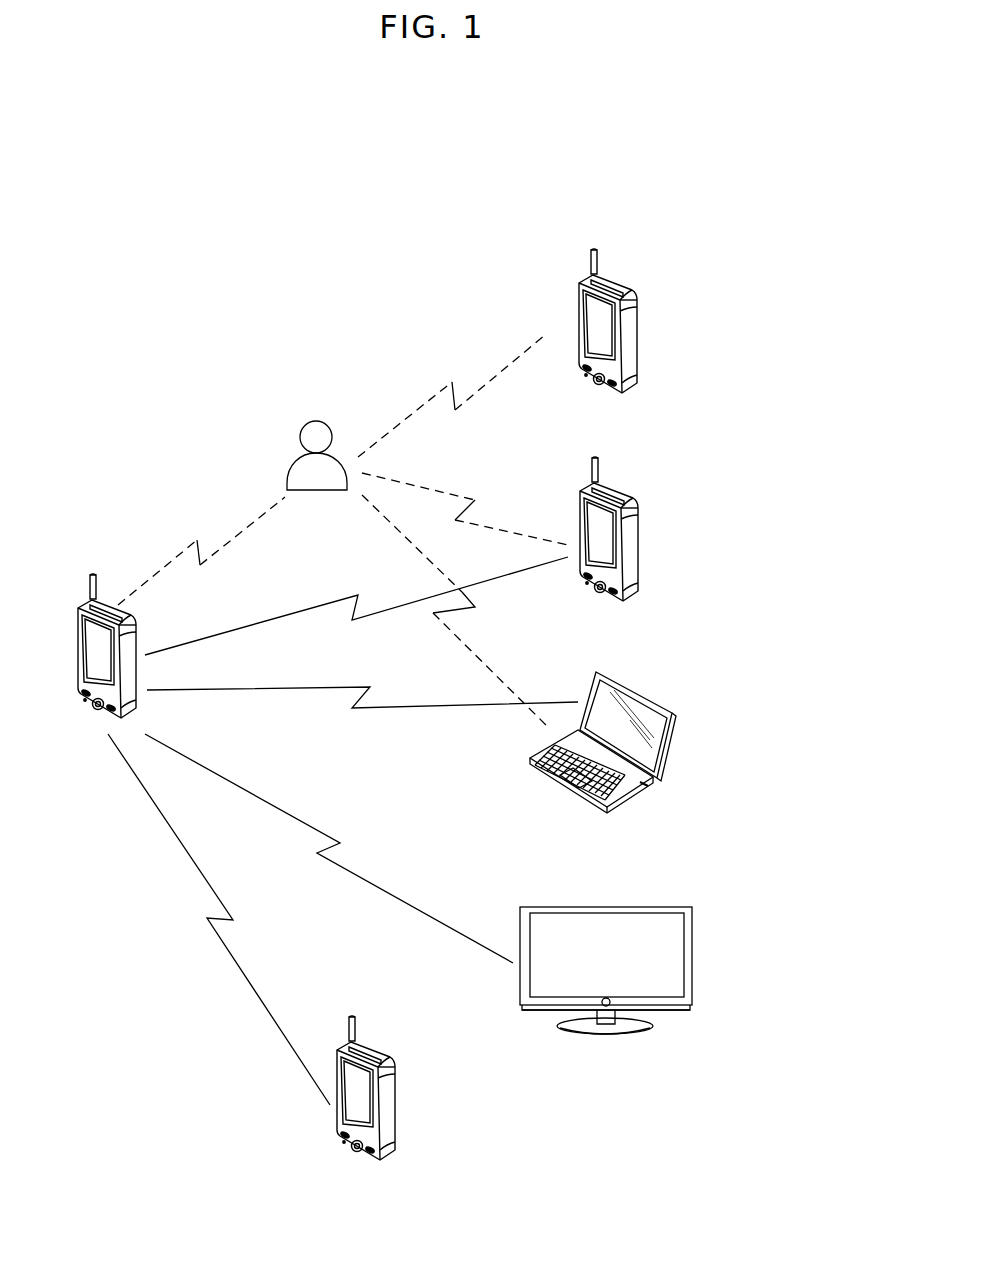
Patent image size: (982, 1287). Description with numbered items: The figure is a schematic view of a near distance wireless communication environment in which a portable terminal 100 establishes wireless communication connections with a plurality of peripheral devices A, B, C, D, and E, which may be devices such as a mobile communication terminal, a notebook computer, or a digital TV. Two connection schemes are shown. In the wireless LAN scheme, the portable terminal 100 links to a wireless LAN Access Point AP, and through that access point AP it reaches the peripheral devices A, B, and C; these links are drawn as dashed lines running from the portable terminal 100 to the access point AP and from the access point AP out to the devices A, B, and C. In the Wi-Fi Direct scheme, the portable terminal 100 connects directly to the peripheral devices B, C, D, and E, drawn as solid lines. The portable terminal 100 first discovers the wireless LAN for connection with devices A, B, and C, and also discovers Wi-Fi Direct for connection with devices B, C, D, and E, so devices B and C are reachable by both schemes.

The portable terminal 100 is at (95, 578).
The wireless LAN Access Point AP is at (317, 442).
The peripheral device A is at (608, 336).
The peripheral device B is at (609, 546).
The peripheral device C is at (603, 757).
The peripheral device D is at (366, 1105).
The peripheral device E is at (606, 985).